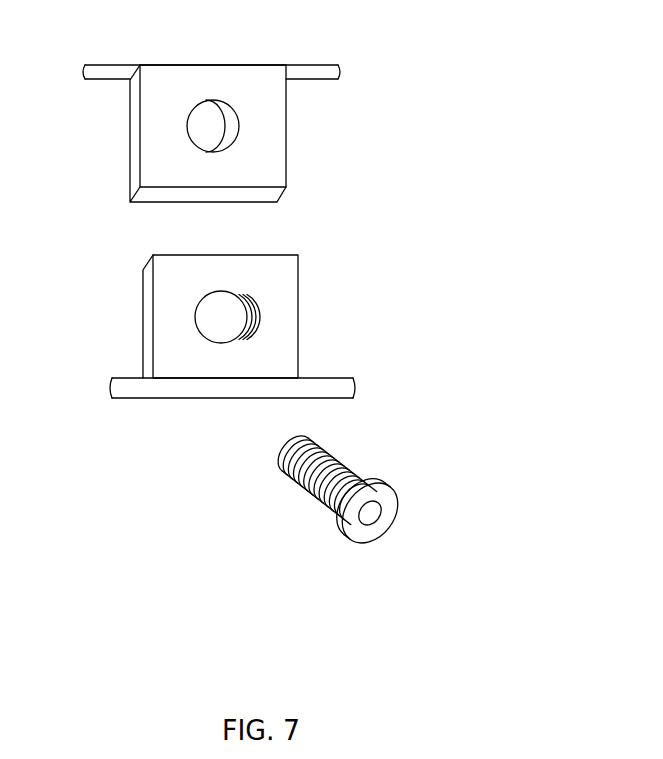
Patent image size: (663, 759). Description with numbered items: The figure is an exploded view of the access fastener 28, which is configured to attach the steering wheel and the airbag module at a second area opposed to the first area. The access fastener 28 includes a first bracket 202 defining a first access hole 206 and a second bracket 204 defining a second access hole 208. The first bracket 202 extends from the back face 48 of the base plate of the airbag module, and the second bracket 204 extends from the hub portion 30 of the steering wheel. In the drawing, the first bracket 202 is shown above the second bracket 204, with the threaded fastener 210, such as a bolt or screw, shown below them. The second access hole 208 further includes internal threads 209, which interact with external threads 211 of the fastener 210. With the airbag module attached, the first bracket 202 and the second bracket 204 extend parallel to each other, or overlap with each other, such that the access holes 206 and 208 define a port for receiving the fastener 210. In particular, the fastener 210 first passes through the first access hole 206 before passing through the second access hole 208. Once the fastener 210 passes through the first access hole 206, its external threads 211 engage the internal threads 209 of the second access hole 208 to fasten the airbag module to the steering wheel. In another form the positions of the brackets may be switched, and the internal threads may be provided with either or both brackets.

The access fastener 28 is at (458, 96).
The hub portion 30 is at (127, 390).
The back face 48 is at (307, 71).
The first bracket 202 is at (152, 120).
The second bracket 204 is at (167, 300).
The first access hole 206 is at (212, 128).
The second access hole 208 is at (224, 314).
The internal threads 209 is at (248, 323).
The fastener 210 is at (390, 513).
The external threads 211 is at (345, 458).